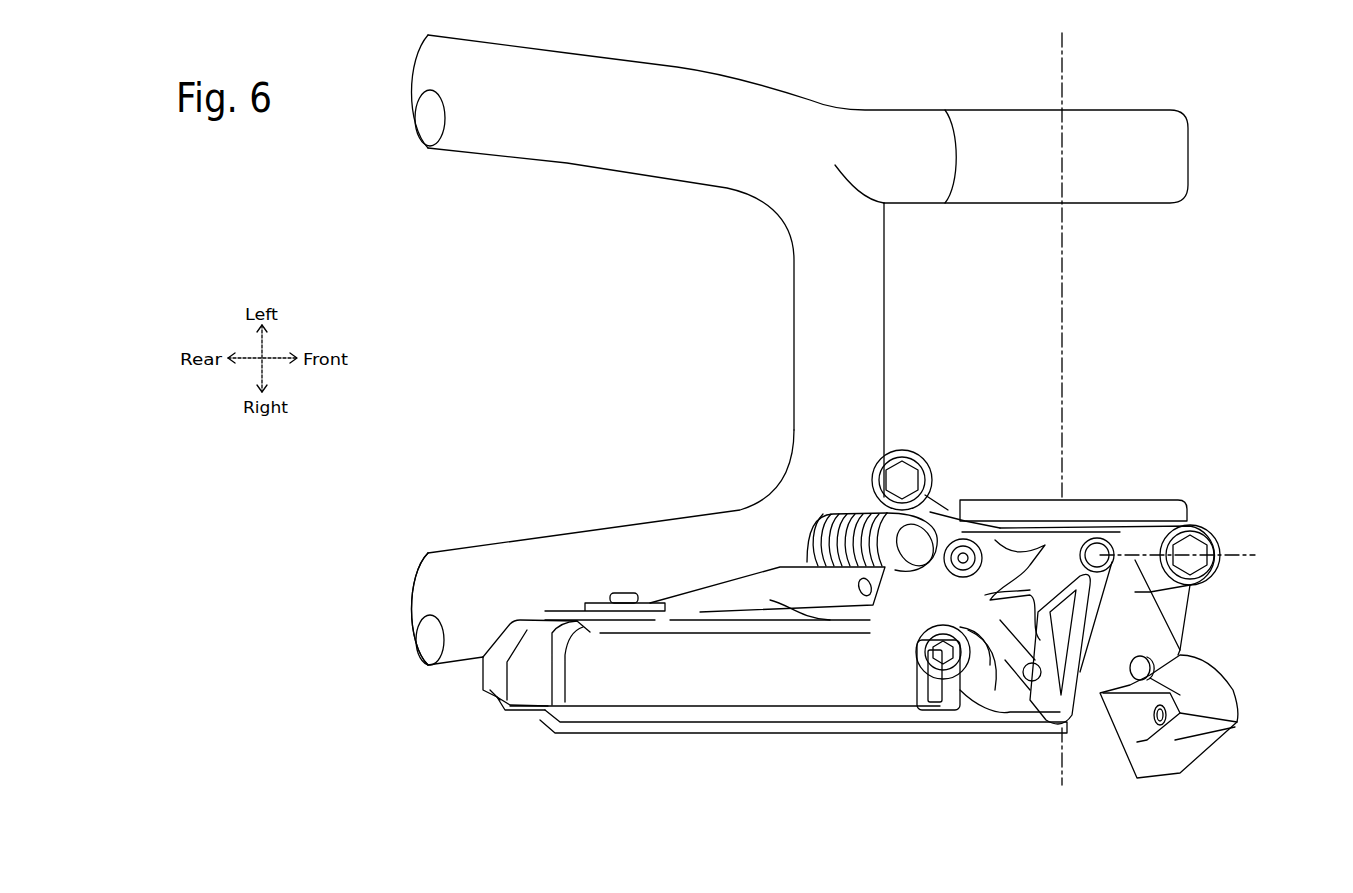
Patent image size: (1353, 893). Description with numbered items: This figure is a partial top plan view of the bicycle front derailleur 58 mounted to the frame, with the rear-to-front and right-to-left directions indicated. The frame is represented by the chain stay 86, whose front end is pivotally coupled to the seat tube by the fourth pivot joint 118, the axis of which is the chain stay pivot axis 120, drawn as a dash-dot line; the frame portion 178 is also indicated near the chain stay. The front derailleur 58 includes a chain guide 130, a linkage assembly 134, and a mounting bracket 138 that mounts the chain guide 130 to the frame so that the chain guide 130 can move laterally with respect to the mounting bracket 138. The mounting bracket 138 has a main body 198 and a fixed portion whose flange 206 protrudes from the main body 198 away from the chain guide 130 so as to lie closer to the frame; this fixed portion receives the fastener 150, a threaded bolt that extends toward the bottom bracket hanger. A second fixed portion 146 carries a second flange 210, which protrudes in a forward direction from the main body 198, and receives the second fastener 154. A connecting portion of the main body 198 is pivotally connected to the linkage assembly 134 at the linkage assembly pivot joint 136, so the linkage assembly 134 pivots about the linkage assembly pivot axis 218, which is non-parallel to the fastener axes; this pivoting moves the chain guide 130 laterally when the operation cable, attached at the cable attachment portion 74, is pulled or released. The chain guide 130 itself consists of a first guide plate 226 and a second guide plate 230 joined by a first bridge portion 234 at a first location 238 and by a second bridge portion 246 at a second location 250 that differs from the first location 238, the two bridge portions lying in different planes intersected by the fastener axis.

The front derailleur 58 is at (1258, 364).
The cable attachment portion 74 is at (915, 645).
The chain stay 86 is at (525, 160).
The fourth pivot joint 118 is at (1046, 495).
The chain stay pivot axis 120 is at (1066, 295).
The chain guide 130 is at (590, 737).
The linkage assembly 134 is at (1007, 589).
The linkage assembly pivot joint 136 is at (1106, 570).
The mounting bracket 138 is at (1128, 522).
The second fixed portion 146 is at (962, 500).
The fastener 150 is at (916, 465).
The second fastener 154 is at (1185, 582).
The frame portion 178 is at (485, 538).
The main body 198 is at (1103, 718).
The flange 206 is at (882, 468).
The second flange 210 is at (1202, 526).
The linkage assembly pivot axis 218 is at (1244, 558).
The first guide plate 226 is at (752, 635).
The second guide plate 230 is at (722, 737).
The first bridge portion 234 is at (967, 712).
The first location 238 is at (960, 752).
The second bridge portion 246 is at (498, 708).
The second location 250 is at (475, 742).